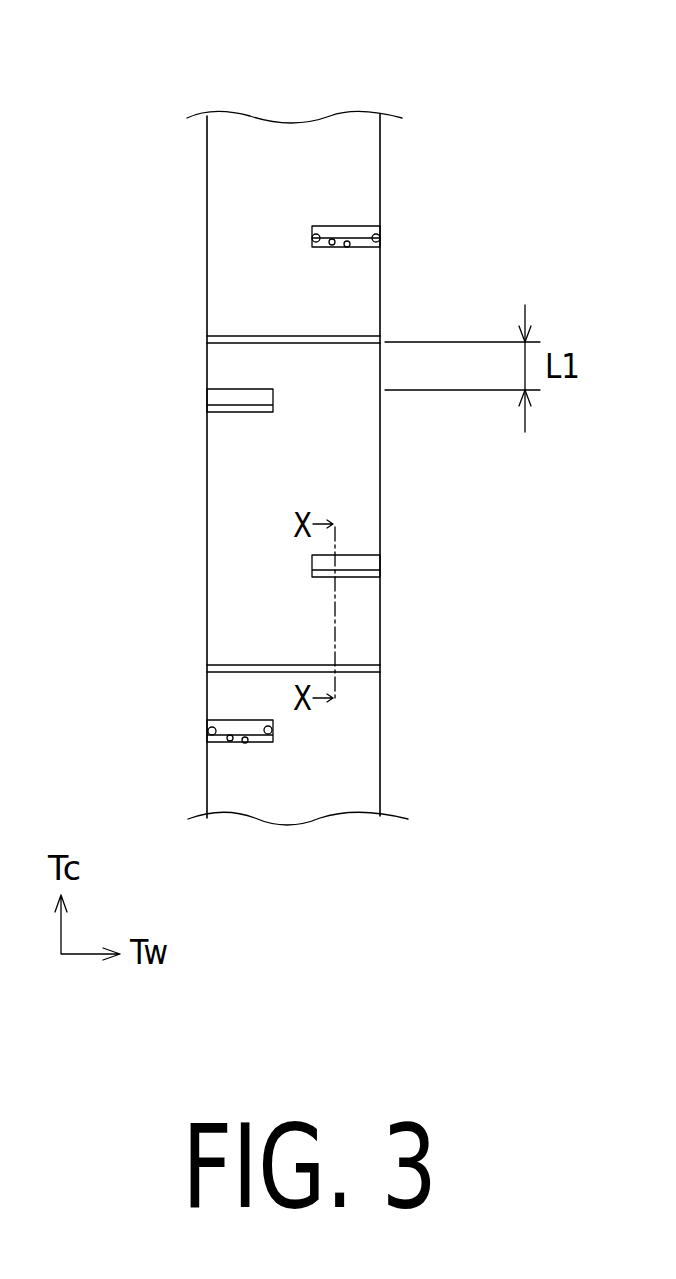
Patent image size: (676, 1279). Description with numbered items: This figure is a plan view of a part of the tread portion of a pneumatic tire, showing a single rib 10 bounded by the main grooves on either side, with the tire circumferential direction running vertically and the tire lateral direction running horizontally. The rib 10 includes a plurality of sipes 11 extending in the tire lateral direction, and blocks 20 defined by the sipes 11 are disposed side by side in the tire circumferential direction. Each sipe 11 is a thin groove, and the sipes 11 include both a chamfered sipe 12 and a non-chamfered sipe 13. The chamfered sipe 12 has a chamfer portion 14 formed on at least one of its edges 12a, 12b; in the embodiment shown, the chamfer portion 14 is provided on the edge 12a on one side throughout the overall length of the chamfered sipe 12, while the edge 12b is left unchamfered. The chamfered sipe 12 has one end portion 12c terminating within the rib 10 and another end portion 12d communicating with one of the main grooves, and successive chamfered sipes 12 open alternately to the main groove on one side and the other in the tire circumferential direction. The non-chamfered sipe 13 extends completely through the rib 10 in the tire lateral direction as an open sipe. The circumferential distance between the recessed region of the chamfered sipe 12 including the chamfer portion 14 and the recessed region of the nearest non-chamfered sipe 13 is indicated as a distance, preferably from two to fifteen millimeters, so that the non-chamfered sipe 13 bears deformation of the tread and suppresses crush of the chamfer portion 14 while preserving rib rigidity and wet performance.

The rib 10 is at (397, 90).
The sipe 11 is at (97, 320).
The chamfered sipe 12 is at (360, 243).
The edge 12a is at (335, 240).
The edge 12b is at (345, 247).
The one end portion 12c is at (312, 236).
The another end portion 12d is at (380, 238).
The non-chamfered sipe 13 is at (238, 338).
The chamfer portion 14 is at (355, 233).
The block 20 is at (335, 458).